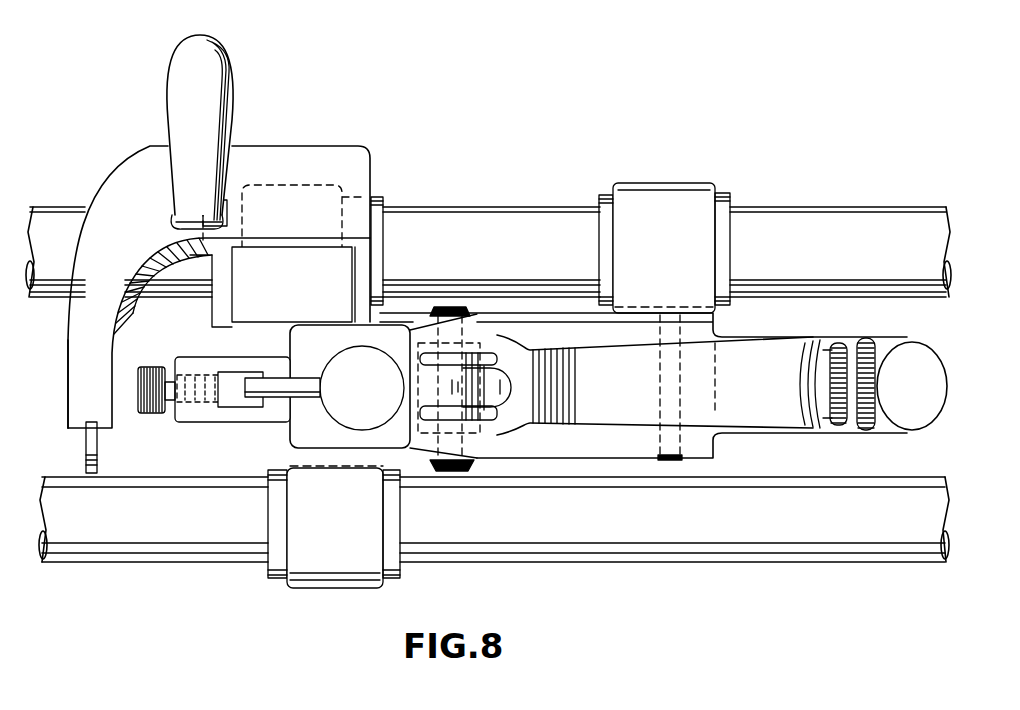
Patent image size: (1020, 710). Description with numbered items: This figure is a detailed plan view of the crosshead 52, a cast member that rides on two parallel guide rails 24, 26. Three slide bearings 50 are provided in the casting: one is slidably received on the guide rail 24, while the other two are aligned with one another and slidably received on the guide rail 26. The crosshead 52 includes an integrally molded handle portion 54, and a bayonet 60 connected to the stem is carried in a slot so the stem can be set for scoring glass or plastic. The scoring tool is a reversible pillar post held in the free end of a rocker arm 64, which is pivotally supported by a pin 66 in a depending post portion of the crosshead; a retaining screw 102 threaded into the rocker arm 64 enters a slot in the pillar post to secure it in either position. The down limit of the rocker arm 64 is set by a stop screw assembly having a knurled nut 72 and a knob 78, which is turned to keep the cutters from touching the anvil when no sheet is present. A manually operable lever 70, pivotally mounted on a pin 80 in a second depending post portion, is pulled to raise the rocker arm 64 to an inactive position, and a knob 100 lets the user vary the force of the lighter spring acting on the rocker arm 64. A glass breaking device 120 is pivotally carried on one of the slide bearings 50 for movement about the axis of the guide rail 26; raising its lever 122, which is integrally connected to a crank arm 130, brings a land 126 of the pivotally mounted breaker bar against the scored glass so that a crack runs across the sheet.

The guide rail 24 is at (587, 553).
The guide rail 26 is at (463, 207).
The slide bearing 50 is at (383, 199).
The crosshead 52 is at (535, 200).
The handle portion 54 is at (737, 353).
The bayonet 60 is at (277, 397).
The rocker arm 64 is at (203, 357).
The pin 66 is at (652, 400).
The lever 70 is at (505, 397).
The knurled nut 72 is at (867, 343).
The knob 78 is at (922, 352).
The pin 80 is at (450, 472).
The knob 100 is at (378, 399).
The retaining screw 102 is at (192, 402).
The glass breaking device 120 is at (194, 264).
The lever 122 is at (232, 72).
The land 126 is at (86, 456).
The crank arm 130 is at (68, 343).